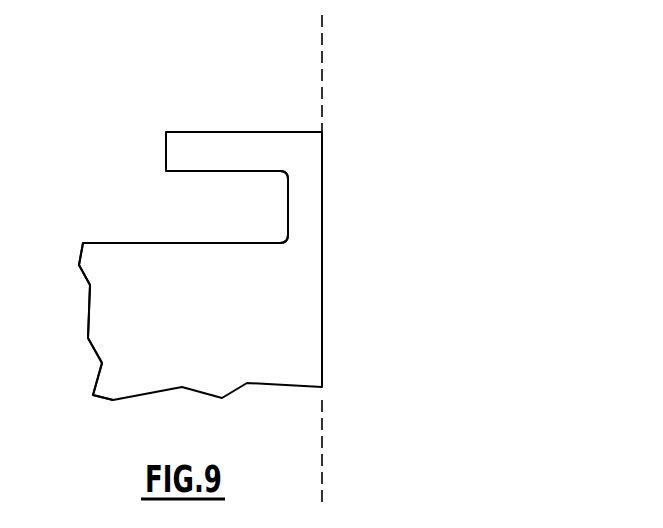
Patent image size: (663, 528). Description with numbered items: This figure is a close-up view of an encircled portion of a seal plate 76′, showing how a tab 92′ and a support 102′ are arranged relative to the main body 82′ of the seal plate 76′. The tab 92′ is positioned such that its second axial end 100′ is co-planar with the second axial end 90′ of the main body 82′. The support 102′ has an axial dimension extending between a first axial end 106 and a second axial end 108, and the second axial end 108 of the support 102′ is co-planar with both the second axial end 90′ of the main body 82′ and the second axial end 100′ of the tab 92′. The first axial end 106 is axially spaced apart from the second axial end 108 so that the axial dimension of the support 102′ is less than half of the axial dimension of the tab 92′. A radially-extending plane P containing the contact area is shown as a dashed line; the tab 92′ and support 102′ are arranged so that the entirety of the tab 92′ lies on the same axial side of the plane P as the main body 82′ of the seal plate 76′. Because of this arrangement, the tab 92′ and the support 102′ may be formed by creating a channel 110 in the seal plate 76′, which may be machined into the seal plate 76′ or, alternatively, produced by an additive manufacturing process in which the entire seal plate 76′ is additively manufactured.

The seal plate 76′ is at (206, 348).
The main body 82′ is at (115, 307).
The second axial end 90′ is at (322, 329).
The tab 92′ is at (230, 144).
The second axial end 100′ is at (322, 148).
The support 102′ is at (307, 205).
The first axial end 106 is at (288, 201).
The second axial end 108 is at (322, 222).
The channel 110 is at (182, 212).
The radially-extending plane P is at (322, 441).